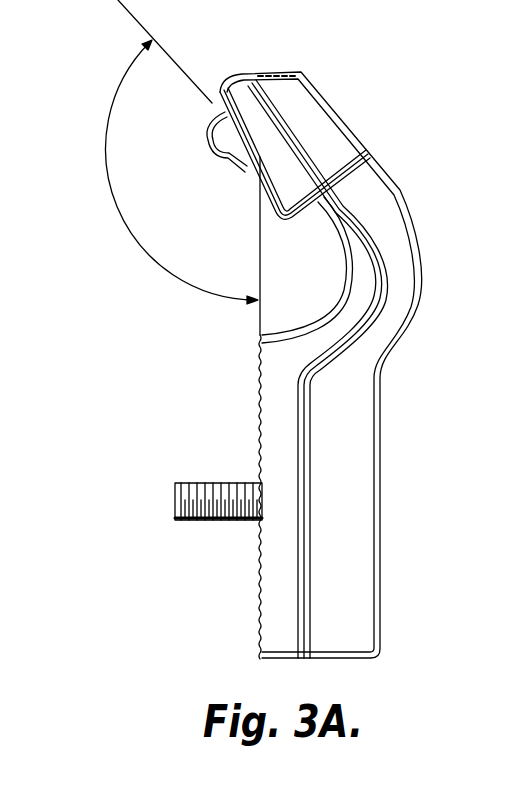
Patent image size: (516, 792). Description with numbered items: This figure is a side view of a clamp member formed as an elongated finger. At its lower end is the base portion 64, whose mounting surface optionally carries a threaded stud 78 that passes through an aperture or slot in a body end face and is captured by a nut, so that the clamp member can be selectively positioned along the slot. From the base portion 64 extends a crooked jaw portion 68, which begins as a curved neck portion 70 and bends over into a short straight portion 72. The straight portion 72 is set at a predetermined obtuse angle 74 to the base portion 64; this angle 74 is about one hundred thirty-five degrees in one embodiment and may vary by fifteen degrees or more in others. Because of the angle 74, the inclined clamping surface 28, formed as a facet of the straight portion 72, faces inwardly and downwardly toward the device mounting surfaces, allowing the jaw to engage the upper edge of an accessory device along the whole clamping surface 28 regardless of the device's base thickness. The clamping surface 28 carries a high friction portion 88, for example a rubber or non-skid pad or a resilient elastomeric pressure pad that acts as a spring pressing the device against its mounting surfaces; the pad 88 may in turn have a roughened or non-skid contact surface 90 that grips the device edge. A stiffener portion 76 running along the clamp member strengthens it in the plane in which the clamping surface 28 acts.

The inclined clamping surface 28 is at (240, 163).
The base portion 64 is at (190, 463).
The crooked jaw portion 68 is at (120, 258).
The curved neck portion 70 is at (338, 283).
The short straight portion 72 is at (313, 132).
The obtuse angle 74 is at (117, 207).
The stiffener portion 76 is at (384, 556).
The threaded stud 78 is at (205, 522).
The high friction portion 88 is at (214, 128).
The contact surface 90 is at (256, 170).